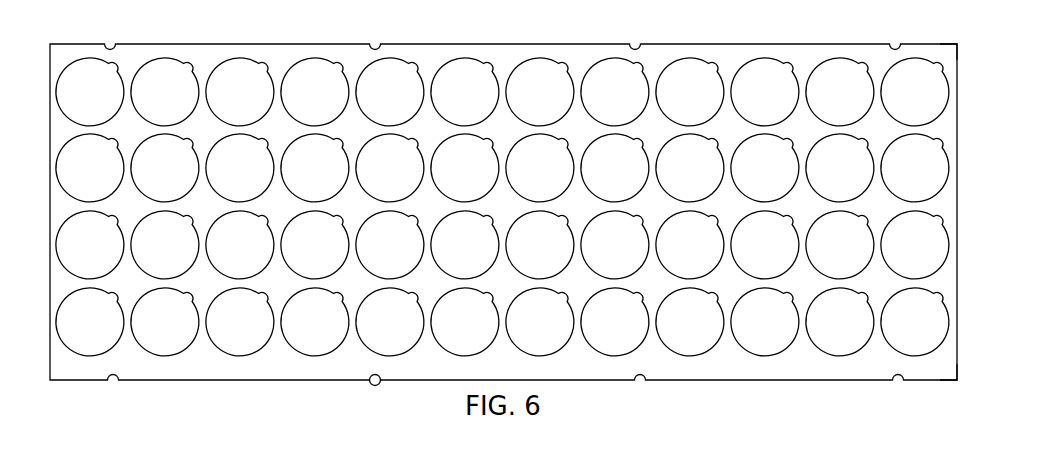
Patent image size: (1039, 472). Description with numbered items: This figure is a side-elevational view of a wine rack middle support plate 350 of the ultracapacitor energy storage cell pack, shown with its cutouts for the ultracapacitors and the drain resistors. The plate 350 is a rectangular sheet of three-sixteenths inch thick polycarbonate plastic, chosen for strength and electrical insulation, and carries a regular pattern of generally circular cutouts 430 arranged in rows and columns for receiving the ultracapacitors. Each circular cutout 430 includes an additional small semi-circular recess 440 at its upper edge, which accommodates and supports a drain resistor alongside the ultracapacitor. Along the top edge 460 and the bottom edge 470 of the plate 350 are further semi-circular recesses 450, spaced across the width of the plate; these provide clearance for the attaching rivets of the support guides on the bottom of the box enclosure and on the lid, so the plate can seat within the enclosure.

The wine rack middle support plate 350 is at (963, 201).
The generally circular cutout 430 is at (713, 351).
The semi-circular recess 440 is at (742, 293).
The semi-circular recess 450 is at (377, 381).
The top edge 460 is at (942, 45).
The bottom edge 470 is at (928, 380).